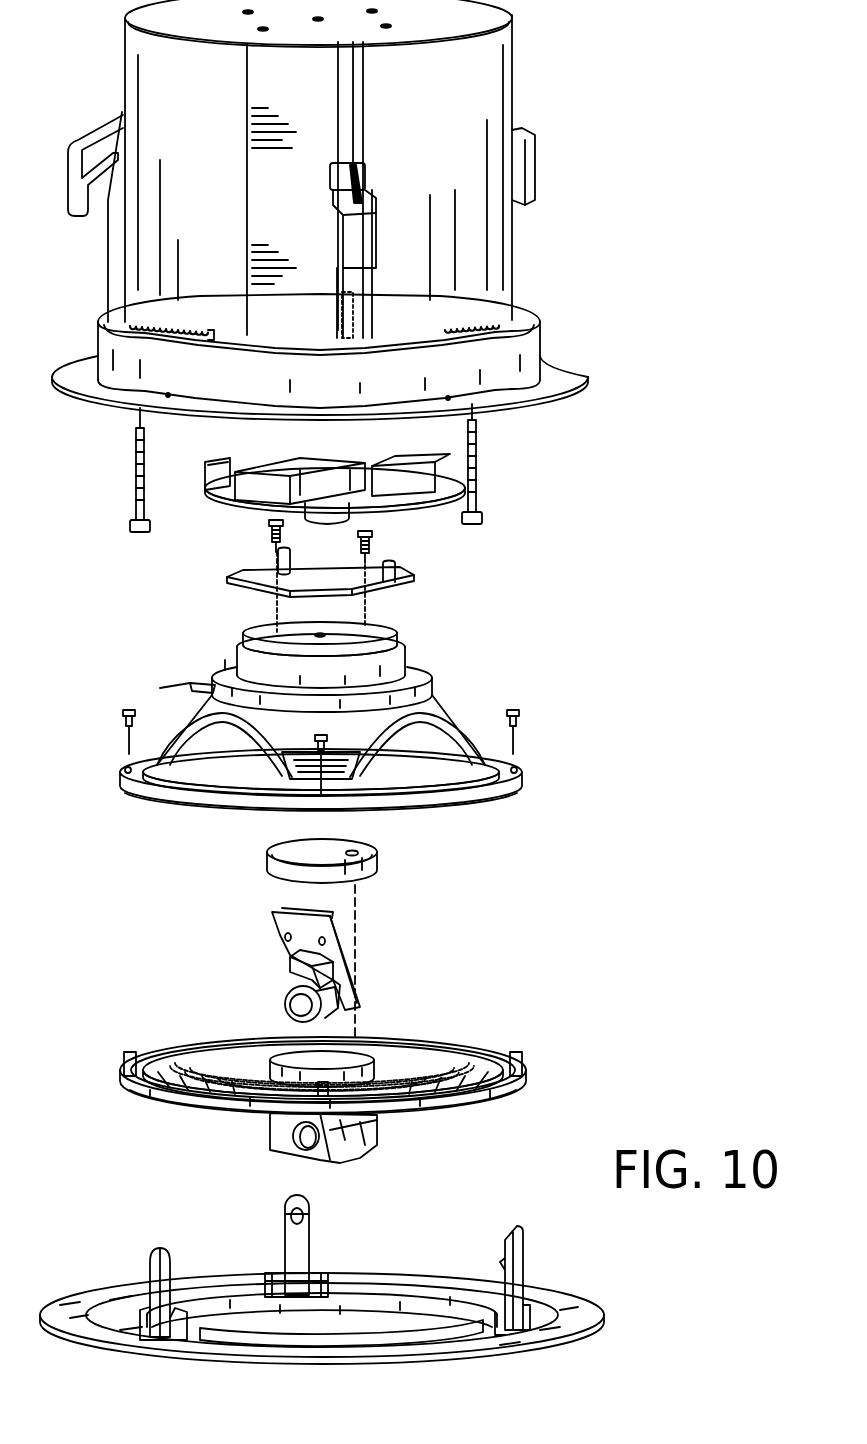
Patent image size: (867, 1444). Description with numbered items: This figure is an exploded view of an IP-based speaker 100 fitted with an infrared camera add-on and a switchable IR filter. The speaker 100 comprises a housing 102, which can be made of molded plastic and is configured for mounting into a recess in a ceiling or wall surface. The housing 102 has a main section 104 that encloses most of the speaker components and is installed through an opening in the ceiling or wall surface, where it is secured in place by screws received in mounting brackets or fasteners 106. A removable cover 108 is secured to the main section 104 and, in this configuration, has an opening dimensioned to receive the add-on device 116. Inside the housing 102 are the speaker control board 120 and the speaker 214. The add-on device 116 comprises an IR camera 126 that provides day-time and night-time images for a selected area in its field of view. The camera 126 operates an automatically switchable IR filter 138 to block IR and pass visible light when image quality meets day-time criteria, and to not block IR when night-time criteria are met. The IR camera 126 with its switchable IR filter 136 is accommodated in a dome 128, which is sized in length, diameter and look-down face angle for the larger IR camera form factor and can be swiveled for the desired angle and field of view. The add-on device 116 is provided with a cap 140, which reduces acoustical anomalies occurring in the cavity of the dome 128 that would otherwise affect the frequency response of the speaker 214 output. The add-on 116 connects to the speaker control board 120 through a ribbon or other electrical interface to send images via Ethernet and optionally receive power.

The IP-based speaker 100 is at (716, 208).
The housing 102 is at (515, 258).
The main section 104 is at (460, 98).
The mounting brackets or fasteners 106 is at (482, 518).
The removable cover 108 is at (605, 1305).
The add-on device 116 is at (237, 1112).
The speaker control board 120 is at (228, 510).
The IR camera 126 is at (272, 920).
The dome 128 is at (377, 1137).
The switchable IR filter 136 is at (293, 968).
The automatically switchable IR filter 138 is at (407, 582).
The cap 140 is at (268, 862).
The speaker 214 is at (453, 713).